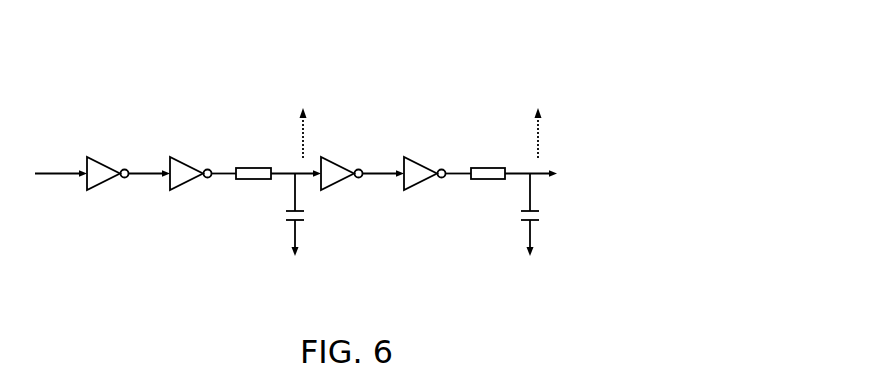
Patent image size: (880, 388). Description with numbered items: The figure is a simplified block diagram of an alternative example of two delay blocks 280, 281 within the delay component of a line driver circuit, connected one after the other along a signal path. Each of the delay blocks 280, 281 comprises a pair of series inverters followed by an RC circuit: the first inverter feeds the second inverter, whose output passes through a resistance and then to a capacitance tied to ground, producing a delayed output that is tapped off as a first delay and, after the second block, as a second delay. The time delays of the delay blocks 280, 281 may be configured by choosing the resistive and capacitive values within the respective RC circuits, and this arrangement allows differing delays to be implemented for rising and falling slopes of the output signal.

The delay block 280 is at (170, 75).
The delay block 281 is at (422, 75).